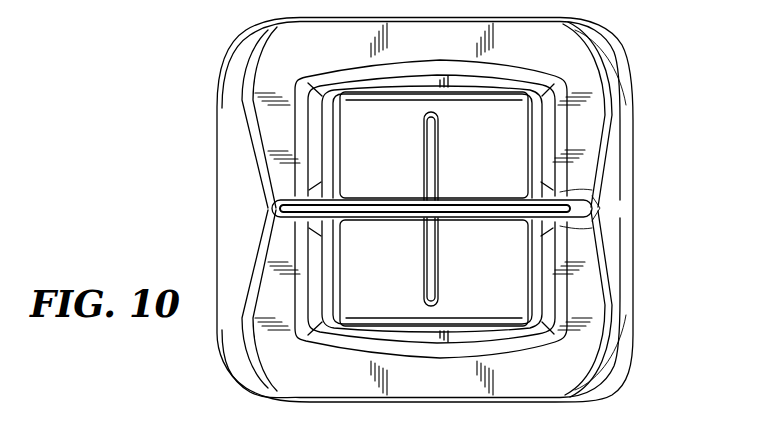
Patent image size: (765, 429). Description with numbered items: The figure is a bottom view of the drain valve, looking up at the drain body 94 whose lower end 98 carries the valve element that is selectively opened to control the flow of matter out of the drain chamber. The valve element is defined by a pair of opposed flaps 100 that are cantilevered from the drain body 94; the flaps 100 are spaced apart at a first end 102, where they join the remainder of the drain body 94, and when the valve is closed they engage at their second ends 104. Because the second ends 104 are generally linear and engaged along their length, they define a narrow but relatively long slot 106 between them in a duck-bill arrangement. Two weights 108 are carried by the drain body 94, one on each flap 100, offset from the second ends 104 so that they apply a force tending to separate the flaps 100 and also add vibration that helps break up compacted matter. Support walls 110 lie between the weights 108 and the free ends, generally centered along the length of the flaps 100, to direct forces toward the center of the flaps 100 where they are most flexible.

The drain body 94 is at (228, 194).
The lower end 98 is at (248, 222).
The flaps 100 is at (550, 198).
The first end 102 is at (580, 73).
The second ends 104 is at (570, 193).
The slot 106 is at (508, 212).
The weights 108 is at (377, 119).
The support walls 110 is at (437, 145).